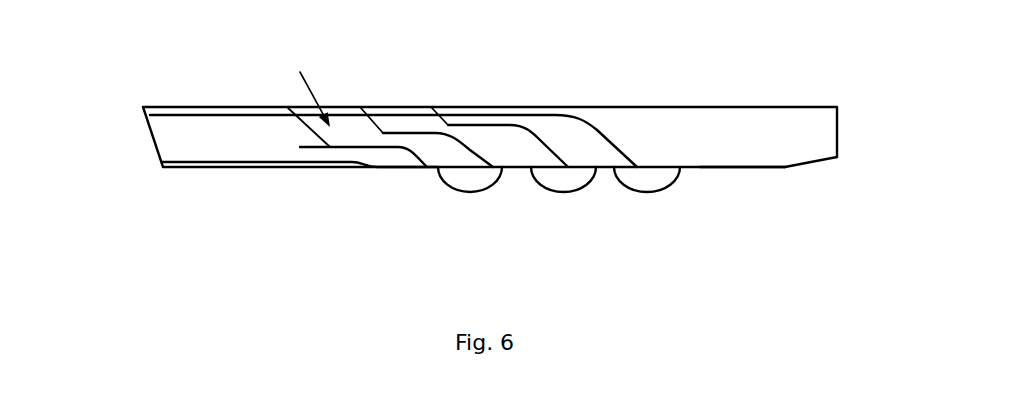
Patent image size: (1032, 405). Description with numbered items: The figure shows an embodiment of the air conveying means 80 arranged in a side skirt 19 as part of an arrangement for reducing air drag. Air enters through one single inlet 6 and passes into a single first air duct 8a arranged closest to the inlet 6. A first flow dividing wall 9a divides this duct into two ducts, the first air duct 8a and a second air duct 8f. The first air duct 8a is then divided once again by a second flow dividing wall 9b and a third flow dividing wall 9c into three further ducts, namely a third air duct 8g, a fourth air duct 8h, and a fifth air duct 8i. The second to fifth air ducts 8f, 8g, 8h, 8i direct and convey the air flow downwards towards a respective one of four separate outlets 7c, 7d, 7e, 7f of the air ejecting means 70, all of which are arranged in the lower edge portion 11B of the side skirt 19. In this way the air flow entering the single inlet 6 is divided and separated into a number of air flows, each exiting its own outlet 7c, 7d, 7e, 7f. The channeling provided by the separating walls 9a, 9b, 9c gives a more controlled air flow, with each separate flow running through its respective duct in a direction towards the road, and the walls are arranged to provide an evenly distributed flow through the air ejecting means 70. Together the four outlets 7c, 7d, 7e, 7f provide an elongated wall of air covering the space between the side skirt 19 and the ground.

The inlet 6 is at (155, 142).
The air conveying means 80 is at (305, 81).
The first flow dividing wall 9a is at (288, 108).
The second flow dividing wall 9b is at (360, 107).
The third flow dividing wall 9c is at (431, 107).
The first air duct 8a is at (212, 150).
The second air duct 8f is at (325, 152).
The third air duct 8g is at (446, 158).
The fourth air duct 8h is at (501, 150).
The fifth air duct 8i is at (572, 146).
The side skirt 19 is at (739, 150).
The outlet 7c is at (395, 168).
The outlet 7d is at (453, 168).
The outlet 7e is at (528, 170).
The outlet 7f is at (607, 170).
The air ejecting means 70 is at (585, 205).
The portion of the lower edge 11B is at (755, 168).